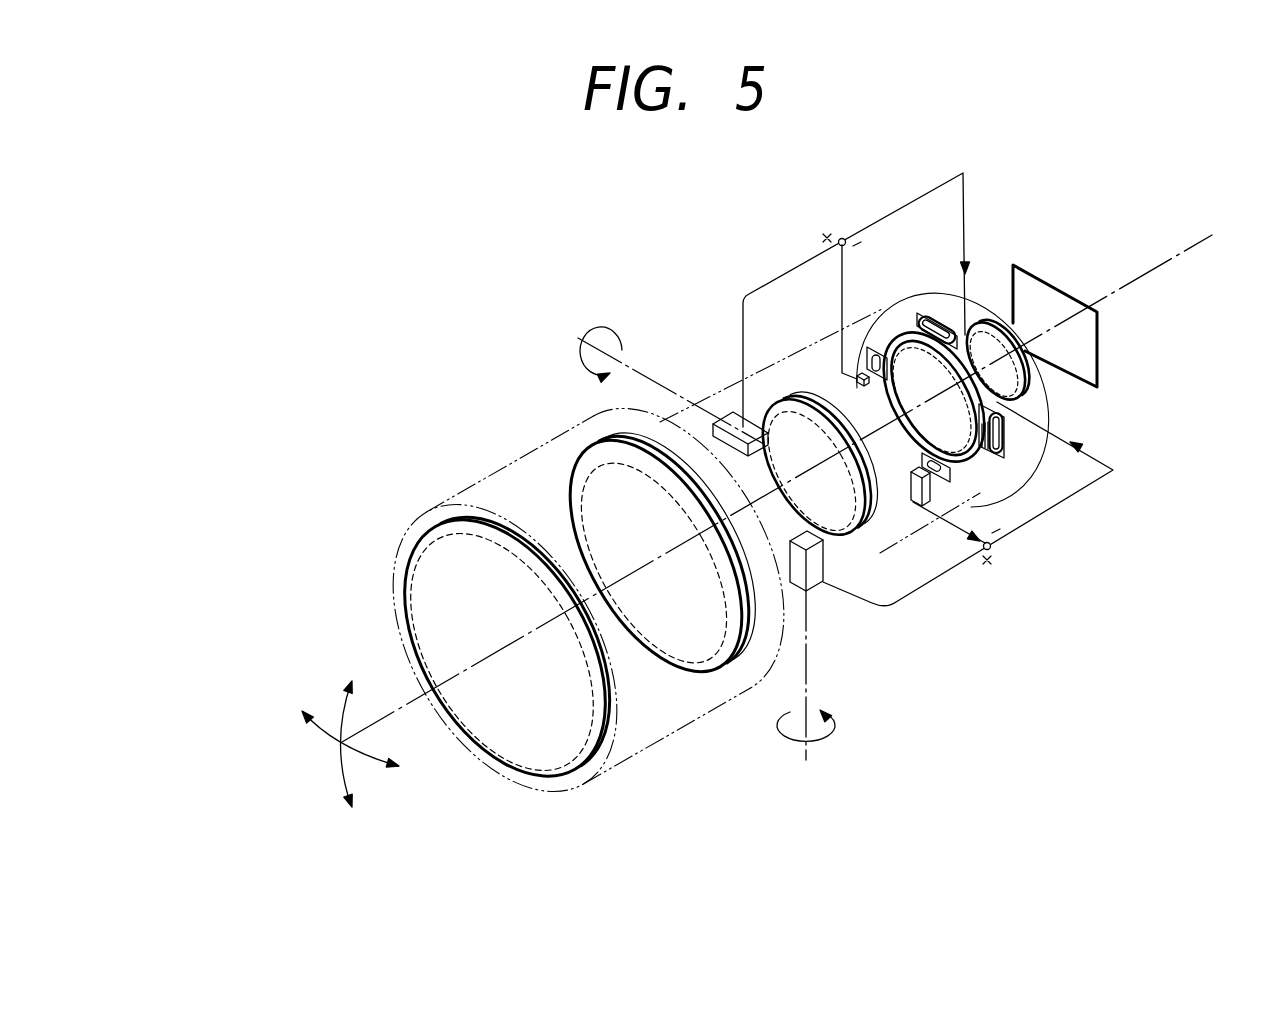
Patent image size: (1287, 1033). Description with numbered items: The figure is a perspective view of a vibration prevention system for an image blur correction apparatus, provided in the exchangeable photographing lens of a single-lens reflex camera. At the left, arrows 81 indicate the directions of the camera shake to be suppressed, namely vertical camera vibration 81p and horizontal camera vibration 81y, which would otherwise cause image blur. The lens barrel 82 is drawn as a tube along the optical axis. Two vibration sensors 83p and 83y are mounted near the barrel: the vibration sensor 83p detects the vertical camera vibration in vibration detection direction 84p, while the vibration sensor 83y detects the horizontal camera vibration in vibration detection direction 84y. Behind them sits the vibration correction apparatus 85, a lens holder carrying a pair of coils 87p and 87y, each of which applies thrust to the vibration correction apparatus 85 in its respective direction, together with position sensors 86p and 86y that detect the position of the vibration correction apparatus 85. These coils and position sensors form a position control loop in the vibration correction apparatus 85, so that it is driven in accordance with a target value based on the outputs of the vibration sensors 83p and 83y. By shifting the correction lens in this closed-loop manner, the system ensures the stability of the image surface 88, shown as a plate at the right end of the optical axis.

The arrows 81 is at (333, 747).
The vertical camera vibration 81p is at (342, 768).
The horizontal camera vibration 81y is at (372, 760).
The lens barrel 82 is at (663, 741).
The vibration sensor 83p is at (733, 418).
The vibration sensor 83y is at (813, 565).
The vibration detection direction 84p is at (622, 349).
The vibration detection direction 84y is at (833, 733).
The vibration correction apparatus 85 is at (990, 262).
The position sensor 86p is at (867, 372).
The position sensor 86y is at (917, 503).
The coil 87p is at (933, 313).
The coil 87y is at (1004, 420).
The image surface 88 is at (1060, 291).